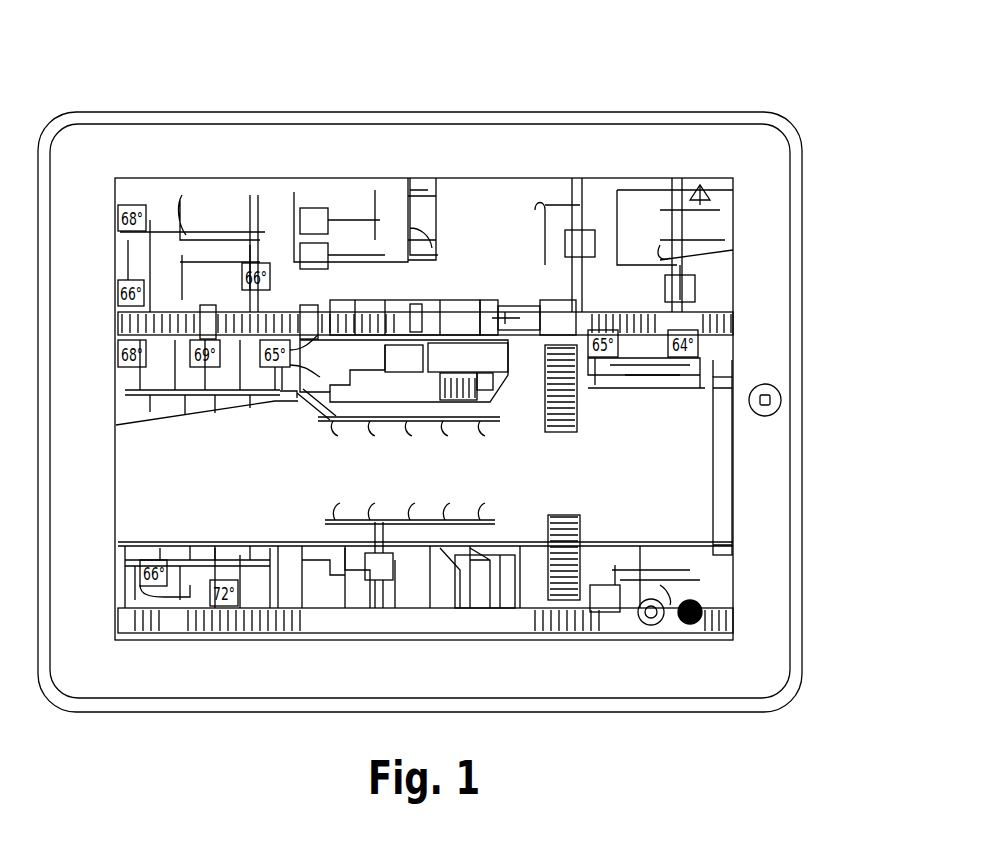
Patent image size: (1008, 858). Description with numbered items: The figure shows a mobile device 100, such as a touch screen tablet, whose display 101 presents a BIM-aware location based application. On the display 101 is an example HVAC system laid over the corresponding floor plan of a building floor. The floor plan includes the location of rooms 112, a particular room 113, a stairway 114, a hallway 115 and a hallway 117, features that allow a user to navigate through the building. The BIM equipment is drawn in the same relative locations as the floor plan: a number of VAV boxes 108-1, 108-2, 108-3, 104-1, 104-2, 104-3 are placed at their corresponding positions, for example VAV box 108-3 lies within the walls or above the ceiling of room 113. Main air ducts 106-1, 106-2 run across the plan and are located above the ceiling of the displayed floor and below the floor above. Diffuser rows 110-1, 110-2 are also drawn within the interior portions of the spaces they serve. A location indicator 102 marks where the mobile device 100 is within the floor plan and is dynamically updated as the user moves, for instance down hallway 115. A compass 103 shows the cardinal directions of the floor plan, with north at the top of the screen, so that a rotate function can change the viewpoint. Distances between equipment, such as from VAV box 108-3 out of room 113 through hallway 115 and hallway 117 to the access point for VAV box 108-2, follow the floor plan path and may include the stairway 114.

The mobile device 100 is at (813, 62).
The display 101 is at (733, 459).
The location indicator 102 is at (665, 443).
The compass 103 is at (700, 190).
The VAV box 104-1 is at (665, 291).
The VAV box 104-2 is at (598, 240).
The VAV box 104-3 is at (632, 550).
The main air duct 106-1 is at (452, 305).
The main air duct 106-2 is at (515, 625).
The VAV box 108-1 is at (310, 210).
The VAV box 108-2 is at (321, 266).
The VAV box 108-3 is at (393, 565).
The diffuser row 110-1 is at (493, 522).
The diffuser row 110-2 is at (500, 419).
The rooms 112 is at (375, 394).
The room 113 is at (426, 600).
The stairway 114 is at (577, 407).
The hallway 115 is at (441, 481).
The hallway 117 is at (298, 398).